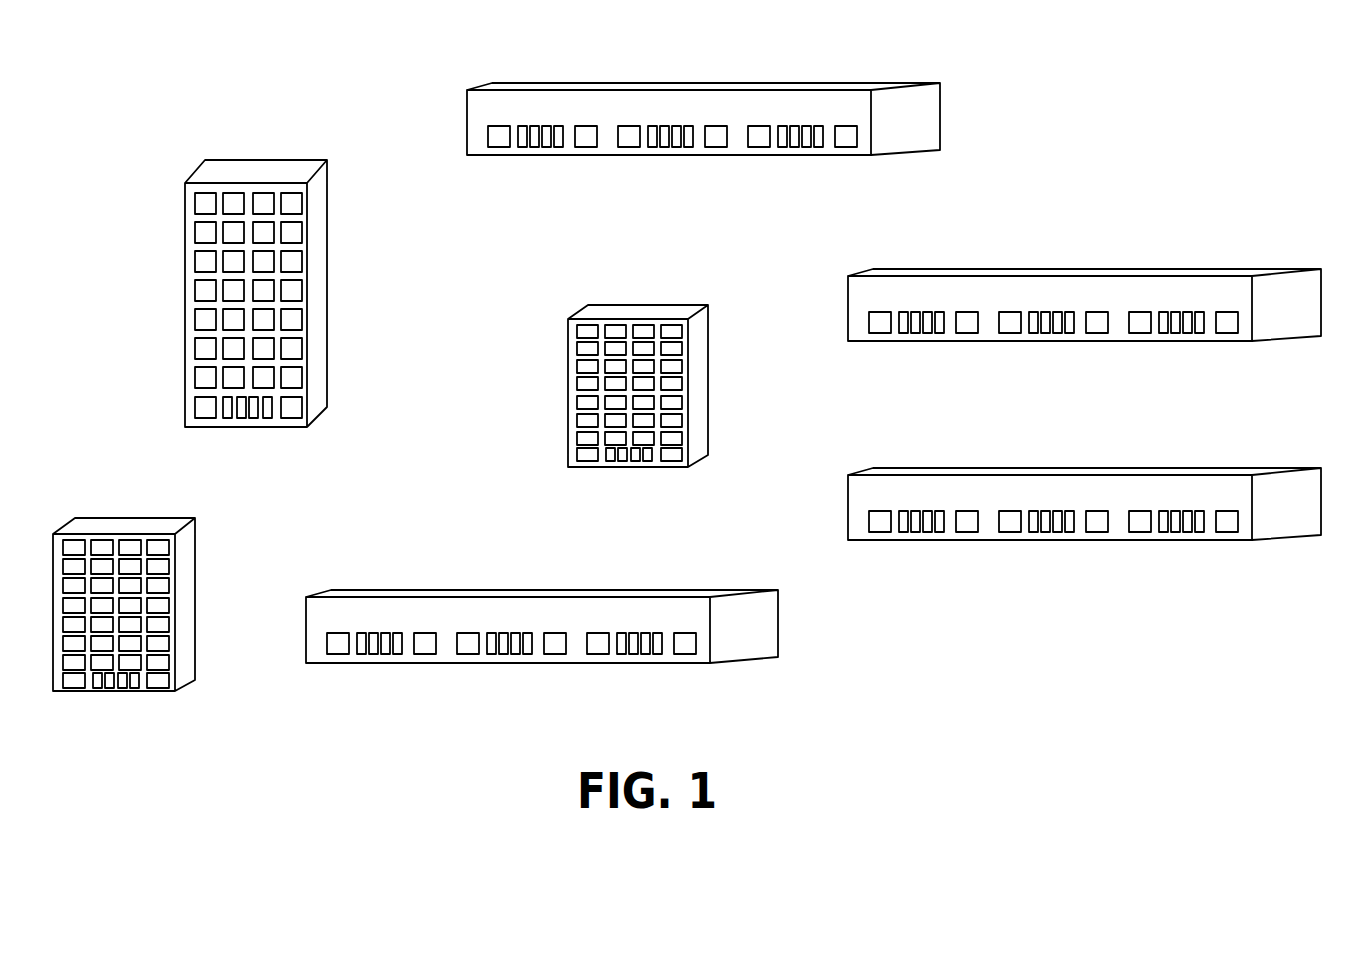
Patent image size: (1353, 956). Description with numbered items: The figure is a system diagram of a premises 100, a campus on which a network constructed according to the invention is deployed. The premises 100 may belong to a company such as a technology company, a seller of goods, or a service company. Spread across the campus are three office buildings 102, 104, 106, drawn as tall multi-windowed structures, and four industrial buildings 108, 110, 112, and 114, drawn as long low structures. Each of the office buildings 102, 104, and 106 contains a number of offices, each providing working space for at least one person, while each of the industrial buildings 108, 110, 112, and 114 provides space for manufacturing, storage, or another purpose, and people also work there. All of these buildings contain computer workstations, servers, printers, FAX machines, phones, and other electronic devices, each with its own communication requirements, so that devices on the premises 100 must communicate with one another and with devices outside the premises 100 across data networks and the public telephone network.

The premises 100 is at (1138, 679).
The office building 102 is at (197, 576).
The office building 104 is at (327, 278).
The office building 106 is at (708, 351).
The industrial building 108 is at (645, 589).
The industrial building 110 is at (1187, 467).
The industrial building 112 is at (1187, 269).
The industrial building 114 is at (805, 83).